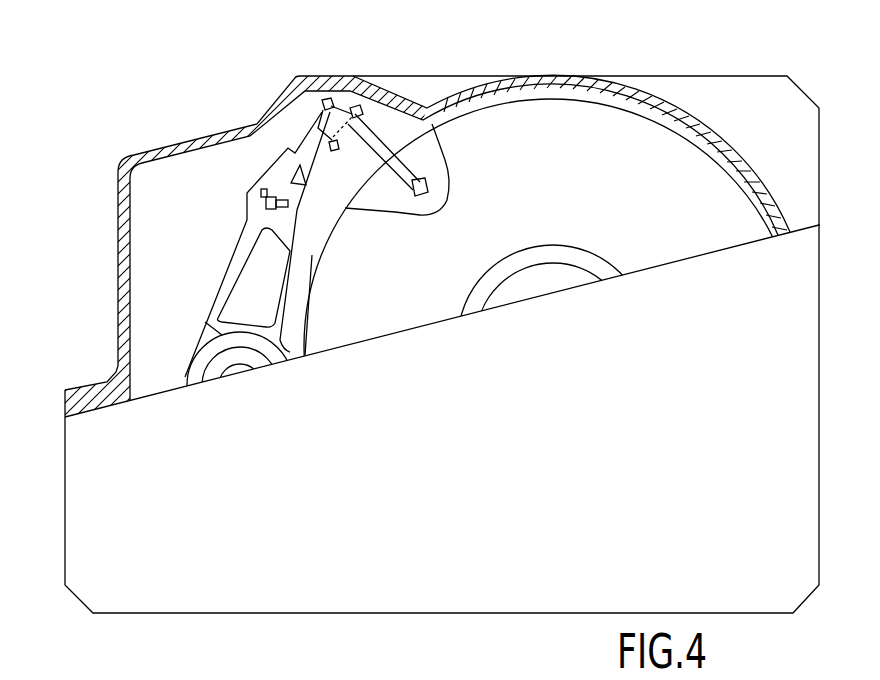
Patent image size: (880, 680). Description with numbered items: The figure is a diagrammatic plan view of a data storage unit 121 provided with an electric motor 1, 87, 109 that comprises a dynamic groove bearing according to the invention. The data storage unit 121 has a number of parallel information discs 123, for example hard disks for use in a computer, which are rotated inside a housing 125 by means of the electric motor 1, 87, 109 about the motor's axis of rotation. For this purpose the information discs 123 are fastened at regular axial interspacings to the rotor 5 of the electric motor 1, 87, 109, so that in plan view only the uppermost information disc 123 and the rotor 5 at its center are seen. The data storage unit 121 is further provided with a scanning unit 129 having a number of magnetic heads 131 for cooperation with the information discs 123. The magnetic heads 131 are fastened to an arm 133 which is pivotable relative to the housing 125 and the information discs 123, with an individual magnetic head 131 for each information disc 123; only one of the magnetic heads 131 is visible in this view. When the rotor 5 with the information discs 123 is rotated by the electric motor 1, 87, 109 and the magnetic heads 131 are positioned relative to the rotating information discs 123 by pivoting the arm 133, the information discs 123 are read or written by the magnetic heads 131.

The data storage unit 121 is at (731, 72).
The information discs 123 is at (473, 165).
The housing 125 is at (75, 420).
The scanning unit 129 is at (256, 169).
The magnetic heads 131 is at (412, 195).
The arm 133 is at (309, 256).
The rotor 5 is at (592, 263).
The electric motor 1 is at (541, 318).
The electric motor 87 is at (541, 318).
The electric motor 109 is at (522, 243).